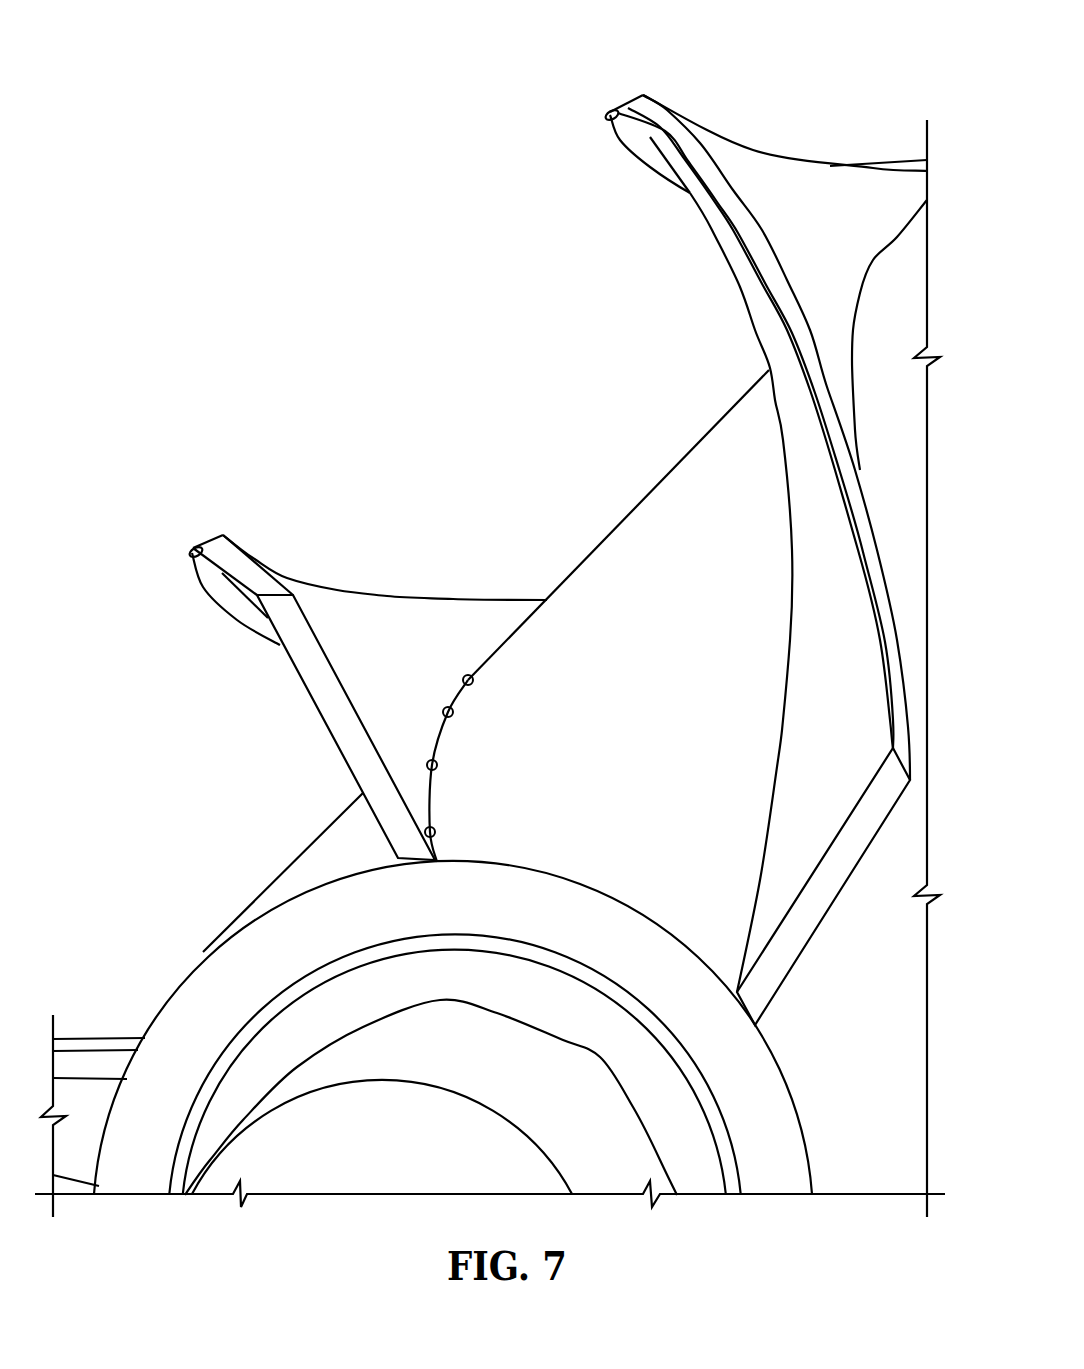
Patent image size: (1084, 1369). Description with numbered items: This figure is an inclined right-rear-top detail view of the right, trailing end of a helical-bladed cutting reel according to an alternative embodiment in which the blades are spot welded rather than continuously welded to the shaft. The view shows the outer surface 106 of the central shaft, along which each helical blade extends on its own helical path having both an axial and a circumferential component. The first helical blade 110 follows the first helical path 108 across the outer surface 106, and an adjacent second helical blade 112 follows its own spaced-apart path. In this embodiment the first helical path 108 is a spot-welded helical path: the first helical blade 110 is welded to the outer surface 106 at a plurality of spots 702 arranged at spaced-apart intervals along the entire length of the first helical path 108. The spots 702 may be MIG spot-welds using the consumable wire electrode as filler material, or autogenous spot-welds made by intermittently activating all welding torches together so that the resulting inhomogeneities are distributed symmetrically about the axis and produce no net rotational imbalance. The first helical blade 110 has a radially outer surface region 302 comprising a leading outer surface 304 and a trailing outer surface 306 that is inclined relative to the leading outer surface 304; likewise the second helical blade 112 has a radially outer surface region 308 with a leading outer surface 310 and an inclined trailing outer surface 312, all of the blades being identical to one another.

The outer surface 106 is at (650, 541).
The first helical path 108 is at (440, 740).
The first helical blade 110 is at (313, 680).
The second helical blade 112 is at (803, 778).
The radially outer surface region 302 is at (203, 553).
The leading outer surface 304 is at (200, 553).
The trailing outer surface 306 is at (218, 540).
The radially outer surface region 308 is at (640, 122).
The leading outer surface 310 is at (623, 112).
The trailing outer surface 312 is at (637, 102).
The spots 702 is at (474, 680).